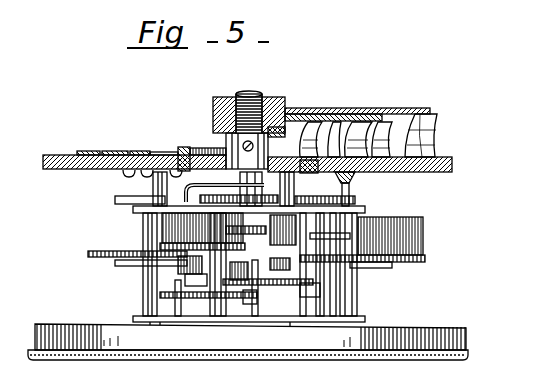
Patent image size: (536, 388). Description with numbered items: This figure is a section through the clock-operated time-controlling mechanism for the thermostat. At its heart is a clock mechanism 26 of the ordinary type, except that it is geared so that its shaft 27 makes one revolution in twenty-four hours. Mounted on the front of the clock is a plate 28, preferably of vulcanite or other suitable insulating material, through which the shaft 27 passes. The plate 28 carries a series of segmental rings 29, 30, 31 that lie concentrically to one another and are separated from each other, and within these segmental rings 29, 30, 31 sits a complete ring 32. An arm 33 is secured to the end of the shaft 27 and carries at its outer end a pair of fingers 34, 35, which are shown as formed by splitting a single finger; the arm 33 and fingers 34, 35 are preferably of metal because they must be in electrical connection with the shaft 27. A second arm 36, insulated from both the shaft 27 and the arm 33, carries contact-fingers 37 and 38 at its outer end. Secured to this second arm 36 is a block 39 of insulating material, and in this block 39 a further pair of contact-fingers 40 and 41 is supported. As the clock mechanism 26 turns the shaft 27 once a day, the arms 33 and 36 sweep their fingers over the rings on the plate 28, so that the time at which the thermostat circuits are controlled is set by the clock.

The clock mechanism 26 is at (359, 297).
The shaft 27 is at (257, 97).
The plate 28 is at (51, 155).
The segmental ring 29 is at (88, 151).
The segmental ring 30 is at (114, 151).
The segmental ring 31 is at (143, 151).
The complete ring 32 is at (190, 141).
The arm 33 is at (330, 110).
The finger 34 is at (398, 172).
The finger 35 is at (440, 153).
The second arm 36 is at (316, 120).
The contact-finger 37 is at (402, 128).
The contact-finger 38 is at (370, 120).
The block of insulating material 39 is at (347, 118).
The contact-finger 40 is at (352, 176).
The contact-finger 41 is at (308, 134).